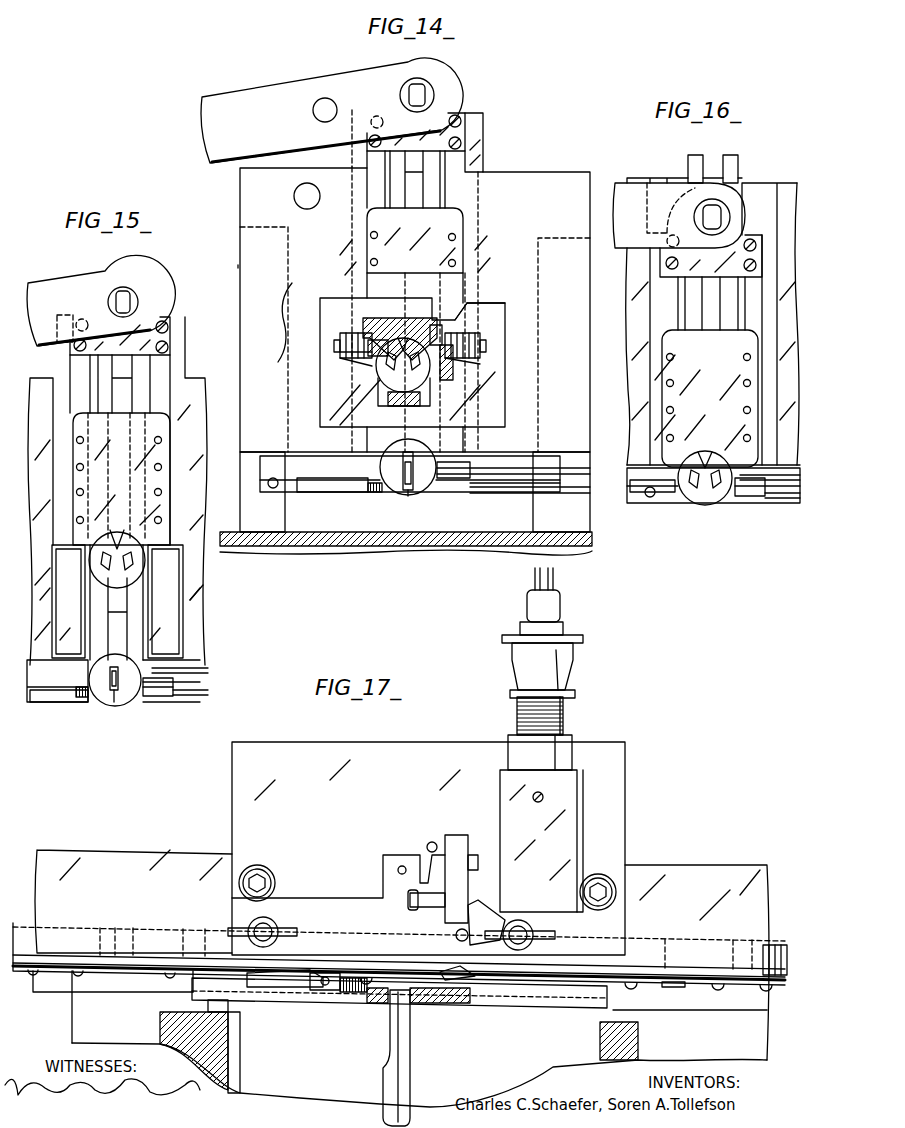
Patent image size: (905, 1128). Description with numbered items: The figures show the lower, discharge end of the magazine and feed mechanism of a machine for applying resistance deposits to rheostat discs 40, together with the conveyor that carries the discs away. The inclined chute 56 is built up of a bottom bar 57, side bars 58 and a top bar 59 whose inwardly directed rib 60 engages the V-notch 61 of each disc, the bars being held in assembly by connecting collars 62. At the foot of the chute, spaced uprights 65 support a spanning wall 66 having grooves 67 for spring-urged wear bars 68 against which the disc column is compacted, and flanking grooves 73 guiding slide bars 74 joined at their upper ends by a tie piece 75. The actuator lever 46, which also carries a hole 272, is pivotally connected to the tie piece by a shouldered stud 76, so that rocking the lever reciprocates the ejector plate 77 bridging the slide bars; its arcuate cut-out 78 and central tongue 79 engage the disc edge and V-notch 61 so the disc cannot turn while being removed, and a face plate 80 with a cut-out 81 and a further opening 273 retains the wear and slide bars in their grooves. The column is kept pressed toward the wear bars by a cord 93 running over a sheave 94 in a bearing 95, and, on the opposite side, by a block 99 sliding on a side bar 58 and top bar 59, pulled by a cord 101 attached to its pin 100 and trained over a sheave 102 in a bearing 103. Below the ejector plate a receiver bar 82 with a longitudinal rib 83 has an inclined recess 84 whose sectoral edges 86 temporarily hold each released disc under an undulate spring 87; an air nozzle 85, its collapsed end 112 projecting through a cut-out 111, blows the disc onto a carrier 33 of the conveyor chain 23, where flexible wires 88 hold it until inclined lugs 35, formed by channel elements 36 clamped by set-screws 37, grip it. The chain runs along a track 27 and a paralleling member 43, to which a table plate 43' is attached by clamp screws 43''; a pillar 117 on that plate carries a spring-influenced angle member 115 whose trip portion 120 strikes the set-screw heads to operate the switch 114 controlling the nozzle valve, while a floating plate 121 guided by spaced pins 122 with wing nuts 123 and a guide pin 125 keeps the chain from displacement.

In FIG. 14, the track 27 is at (400, 548).
In FIG. 17, the conveyor chain 23 is at (180, 940).
In FIG. 17, the carrier 33 is at (45, 950).
In FIG. 17, the inclined lugs 35 is at (700, 990).
In FIG. 17, the channel section elements 36 is at (125, 950).
In FIG. 17, the set-screws 37 is at (705, 965).
In FIG. 14, the rheostat discs 40 is at (362, 410).
In FIG. 15, the rheostat discs 40 is at (125, 585).
In FIG. 16, the rheostat discs 40 is at (700, 505).
In FIG. 17, the rheostat discs 40 is at (100, 992).
In FIG. 17, the member paralleling track 43 is at (402, 901).
In FIG. 17, the table plate 43' is at (626, 841).
In FIG. 17, the clamp screws 43'' is at (430, 865).
In FIG. 14, the actuator lever 46 is at (332, 110).
In FIG. 15, the actuator lever 46 is at (47, 290).
In FIG. 16, the actuator lever 46 is at (620, 245).
In FIG. 14, the inclined chute 56 is at (266, 322).
In FIG. 14, the bottom bar 57 is at (425, 406).
In FIG. 14, the side bars 58 is at (370, 372).
In FIG. 14, the top bar 59 is at (462, 310).
In FIG. 14, the rib 60 is at (420, 338).
In FIG. 14, the V-notch 61 is at (443, 335).
In FIG. 15, the V-notch 61 is at (128, 565).
In FIG. 16, the V-notch 61 is at (714, 472).
In FIG. 14, the connecting collars 62 is at (490, 310).
In FIG. 14, the spaced uprights 65 is at (415, 492).
In FIG. 15, the spanning wall 66 is at (190, 585).
In FIG. 16, the spanning wall 66 is at (788, 195).
In FIG. 15, the grooves 67 is at (90, 633).
In FIG. 14, the wear bars 68 is at (432, 190).
In FIG. 15, the wear bars 68 is at (120, 384).
In FIG. 16, the wear bars 68 is at (730, 160).
In FIG. 14, the flanking grooves 73 is at (480, 242).
In FIG. 15, the flanking grooves 73 is at (70, 602).
In FIG. 16, the flanking grooves 73 is at (668, 180).
In FIG. 14, the slide bars 74 is at (352, 160).
In FIG. 15, the slide bars 74 is at (52, 380).
In FIG. 16, the slide bars 74 is at (742, 290).
In FIG. 14, the tie piece 75 is at (455, 115).
In FIG. 15, the tie piece 75 is at (150, 322).
In FIG. 16, the tie piece 75 is at (672, 277).
In FIG. 14, the shouldered stud 76 is at (421, 90).
In FIG. 15, the shouldered stud 76 is at (128, 296).
In FIG. 16, the shouldered stud 76 is at (703, 217).
In FIG. 14, the ejector plate 77 is at (460, 220).
In FIG. 15, the ejector plate 77 is at (125, 455).
In FIG. 16, the ejector plate 77 is at (710, 398).
In FIG. 15, the arcuate cut-out 78 is at (80, 552).
In FIG. 16, the arcuate cut-out 78 is at (680, 451).
In FIG. 15, the central tongue 79 is at (122, 540).
In FIG. 16, the central tongue 79 is at (703, 456).
In FIG. 14, the face plate 80 is at (242, 268).
In FIG. 15, the face plate 80 is at (238, 268).
In FIG. 14, the cut-out 81 is at (365, 230).
In FIG. 14, the bar 82 is at (318, 483).
In FIG. 15, the bar 82 is at (36, 695).
In FIG. 16, the bar 82 is at (632, 485).
In FIG. 17, the bar 82 is at (225, 1003).
In FIG. 14, the longitudinal rib 83 is at (455, 486).
In FIG. 15, the longitudinal rib 83 is at (58, 698).
In FIG. 16, the longitudinal rib 83 is at (650, 498).
In FIG. 17, the longitudinal rib 83 is at (282, 990).
In FIG. 14, the inclined recess 84 is at (425, 486).
In FIG. 15, the inclined recess 84 is at (128, 692).
In FIG. 17, the inclined recess 84 is at (428, 1004).
In FIG. 14, the air nozzle 85 is at (410, 465).
In FIG. 15, the air nozzle 85 is at (110, 672).
In FIG. 17, the air nozzle 85 is at (386, 1087).
In FIG. 14, the sectoral edges 86 is at (380, 468).
In FIG. 15, the sectoral edges 86 is at (113, 681).
In FIG. 16, the sectoral edges 86 is at (725, 500).
In FIG. 14, the undulate spring 87 is at (455, 470).
In FIG. 15, the undulate spring 87 is at (150, 690).
In FIG. 16, the undulate spring 87 is at (748, 497).
In FIG. 17, the undulate spring 87 is at (305, 988).
In FIG. 14, the flexible wires 88 is at (575, 471).
In FIG. 15, the flexible wires 88 is at (208, 670).
In FIG. 16, the flexible wires 88 is at (640, 478).
In FIG. 17, the flexible wires 88 is at (140, 992).
In FIG. 14, the flexible cord 93 is at (465, 362).
In FIG. 14, the sheave 94 is at (470, 355).
In FIG. 14, the bearing 95 is at (480, 343).
In FIG. 14, the block 99 is at (372, 318).
In FIG. 14, the lateral hook or pin 100 is at (346, 335).
In FIG. 14, the flexible cord 101 is at (352, 362).
In FIG. 14, the sheave 102 is at (350, 354).
In FIG. 14, the bearing 103 is at (334, 345).
In FIG. 14, the cut-out 111 is at (378, 490).
In FIG. 15, the cut-out 111 is at (100, 690).
In FIG. 17, the cut-out 111 is at (360, 993).
In FIG. 14, the collapsed nozzle end 112 is at (410, 494).
In FIG. 15, the collapsed nozzle end 112 is at (114, 698).
In FIG. 17, the collapsed nozzle end 112 is at (388, 1047).
In FIG. 17, the switch 114 is at (565, 800).
In FIG. 17, the angle member 115 is at (455, 840).
In FIG. 17, the pillar 117 is at (462, 930).
In FIG. 17, the trip portion 120 is at (412, 905).
In FIG. 17, the floating plate 121 is at (366, 898).
In FIG. 17, the spaced pins 122 is at (270, 918).
In FIG. 17, the wing nuts 123 is at (282, 930).
In FIG. 17, the guide pin 125 is at (402, 866).
In FIG. 14, the lever hole 272 is at (318, 100).
In FIG. 14, the housing hole 273 is at (294, 196).